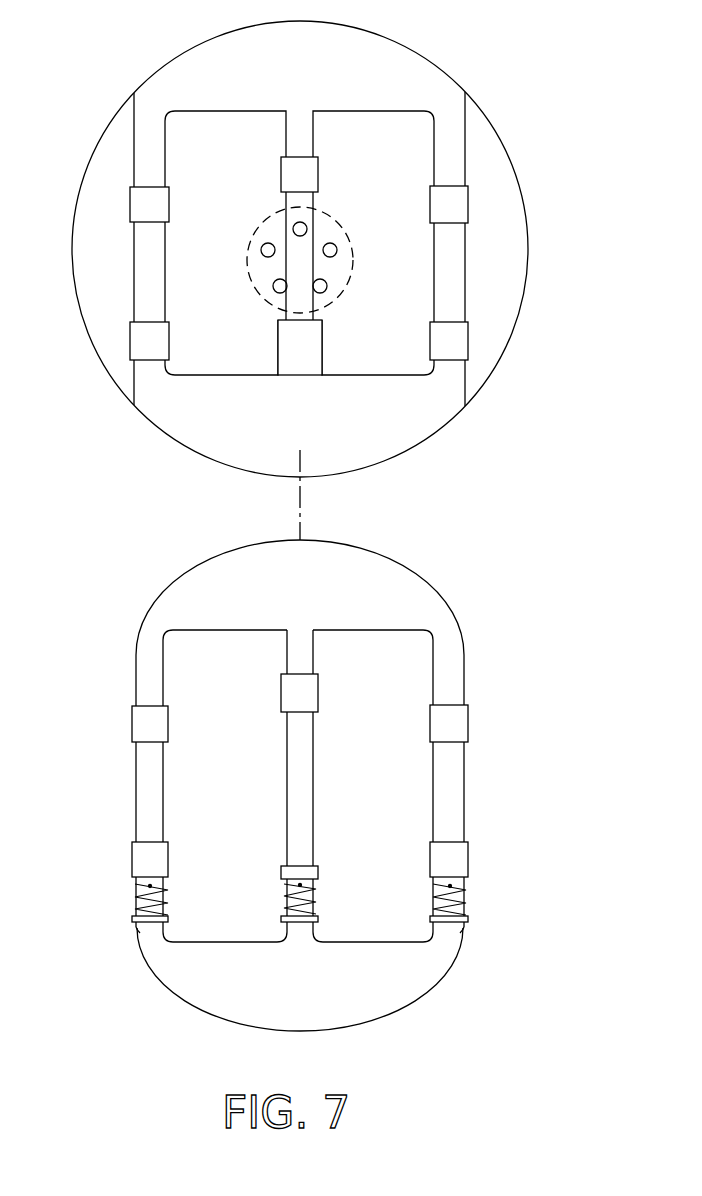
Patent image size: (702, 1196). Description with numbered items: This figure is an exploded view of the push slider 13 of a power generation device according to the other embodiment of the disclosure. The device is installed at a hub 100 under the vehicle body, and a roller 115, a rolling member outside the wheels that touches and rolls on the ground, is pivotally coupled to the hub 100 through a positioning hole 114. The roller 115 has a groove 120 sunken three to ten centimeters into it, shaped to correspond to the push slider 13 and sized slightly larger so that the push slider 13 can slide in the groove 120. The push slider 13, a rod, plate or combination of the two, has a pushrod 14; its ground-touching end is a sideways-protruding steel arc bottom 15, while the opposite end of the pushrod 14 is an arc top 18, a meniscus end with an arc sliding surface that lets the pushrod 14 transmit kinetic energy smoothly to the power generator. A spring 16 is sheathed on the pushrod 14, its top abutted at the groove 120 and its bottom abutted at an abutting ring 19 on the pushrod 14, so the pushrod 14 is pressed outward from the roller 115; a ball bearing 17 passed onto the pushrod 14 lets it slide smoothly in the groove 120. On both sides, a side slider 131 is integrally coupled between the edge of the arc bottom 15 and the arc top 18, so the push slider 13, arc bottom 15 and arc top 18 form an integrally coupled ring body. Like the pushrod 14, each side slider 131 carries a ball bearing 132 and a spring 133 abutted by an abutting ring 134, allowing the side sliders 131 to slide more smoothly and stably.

The push slider 13 is at (334, 793).
The pushrod 14 is at (305, 782).
The arc bottom 15 is at (398, 990).
The spring 16 is at (315, 911).
The ball bearing 17 is at (303, 692).
The arc top 18 is at (374, 567).
The abutting ring 19 is at (320, 918).
The hub 100 is at (299, 264).
The positioning hole 114 is at (264, 255).
The roller 115 is at (488, 148).
The groove 120 is at (392, 437).
The side slider 131 is at (452, 791).
The ball bearing 132 is at (453, 727).
The spring 133 is at (450, 896).
The abutting ring 134 is at (148, 930).